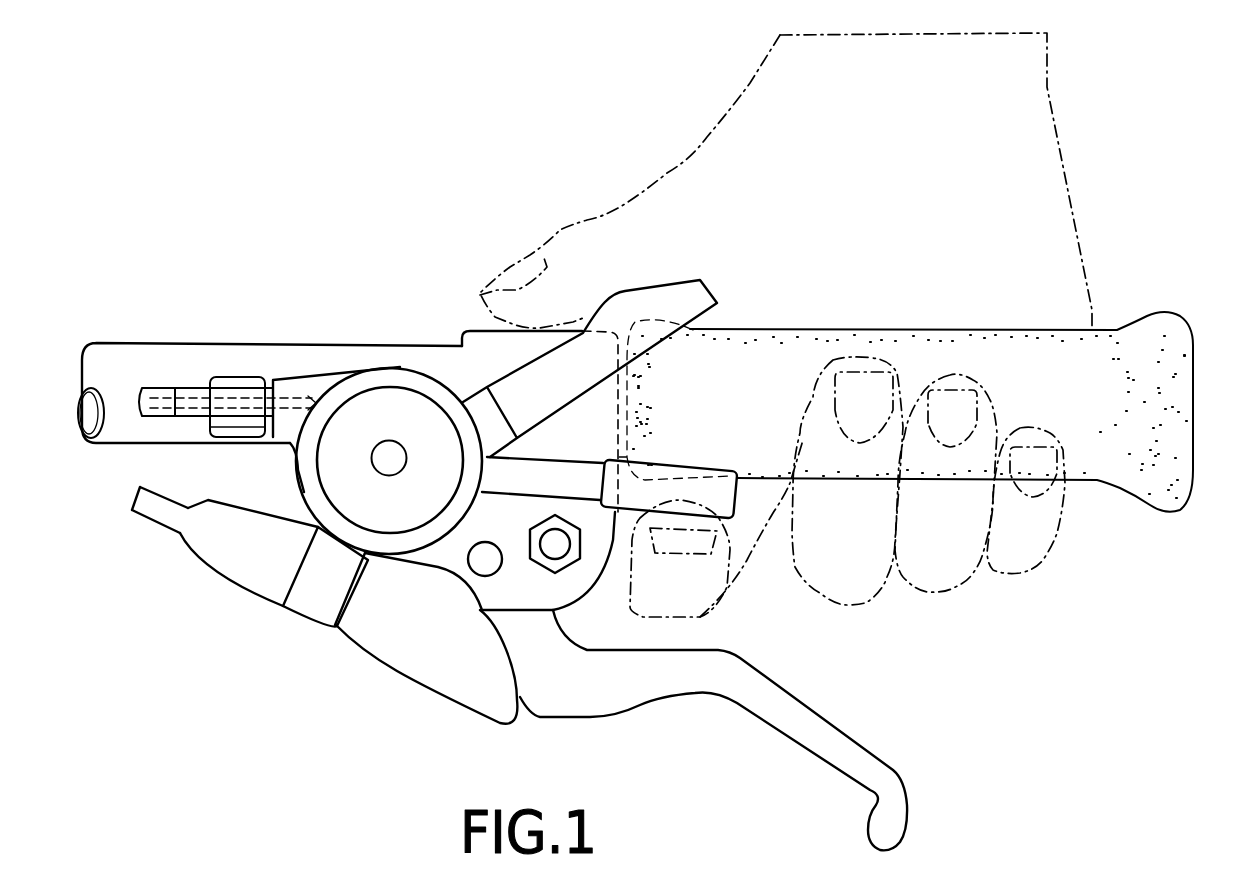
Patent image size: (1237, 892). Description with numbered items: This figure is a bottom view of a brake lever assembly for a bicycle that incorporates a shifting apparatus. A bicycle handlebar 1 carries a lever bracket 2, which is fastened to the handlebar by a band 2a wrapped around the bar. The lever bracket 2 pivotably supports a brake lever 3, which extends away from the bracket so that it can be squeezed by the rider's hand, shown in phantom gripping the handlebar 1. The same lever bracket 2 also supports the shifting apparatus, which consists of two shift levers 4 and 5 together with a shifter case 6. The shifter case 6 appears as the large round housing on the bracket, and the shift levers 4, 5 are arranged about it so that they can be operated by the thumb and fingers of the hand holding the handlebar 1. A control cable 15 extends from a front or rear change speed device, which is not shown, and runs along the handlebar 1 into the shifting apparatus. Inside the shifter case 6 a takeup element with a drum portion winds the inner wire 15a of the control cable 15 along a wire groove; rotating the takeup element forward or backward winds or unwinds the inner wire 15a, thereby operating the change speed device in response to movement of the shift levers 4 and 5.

The bicycle handlebar 1 is at (127, 343).
The lever bracket 2 is at (478, 592).
The band 2a is at (477, 337).
The brake lever 3 is at (685, 695).
The shift lever 4 is at (703, 285).
The shift lever 5 is at (737, 512).
The shifter case 6 is at (368, 405).
The control cable 15 is at (162, 418).
The inner wire 15a is at (293, 402).